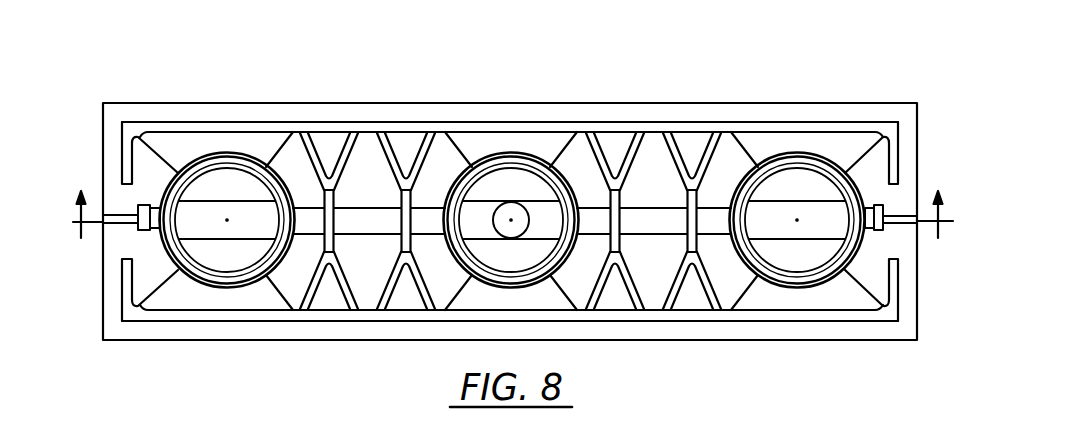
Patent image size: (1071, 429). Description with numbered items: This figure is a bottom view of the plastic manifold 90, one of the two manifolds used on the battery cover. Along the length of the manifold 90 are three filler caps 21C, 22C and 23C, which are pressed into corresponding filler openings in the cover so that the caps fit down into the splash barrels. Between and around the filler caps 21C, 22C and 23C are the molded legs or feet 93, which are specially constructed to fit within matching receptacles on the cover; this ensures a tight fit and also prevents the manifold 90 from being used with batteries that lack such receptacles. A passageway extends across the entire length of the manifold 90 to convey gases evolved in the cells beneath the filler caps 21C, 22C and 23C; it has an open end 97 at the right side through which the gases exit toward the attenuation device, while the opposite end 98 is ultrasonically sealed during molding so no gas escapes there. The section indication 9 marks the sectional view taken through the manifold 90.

The manifold 90 is at (368, 52).
The filler cap 21C is at (208, 152).
The filler cap 22C is at (513, 152).
The filler cap 23C is at (797, 152).
The legs 93 is at (397, 259).
The open end 97 is at (892, 223).
The opposite end 98 is at (134, 225).
The section line 9- 9 is at (513, 202).